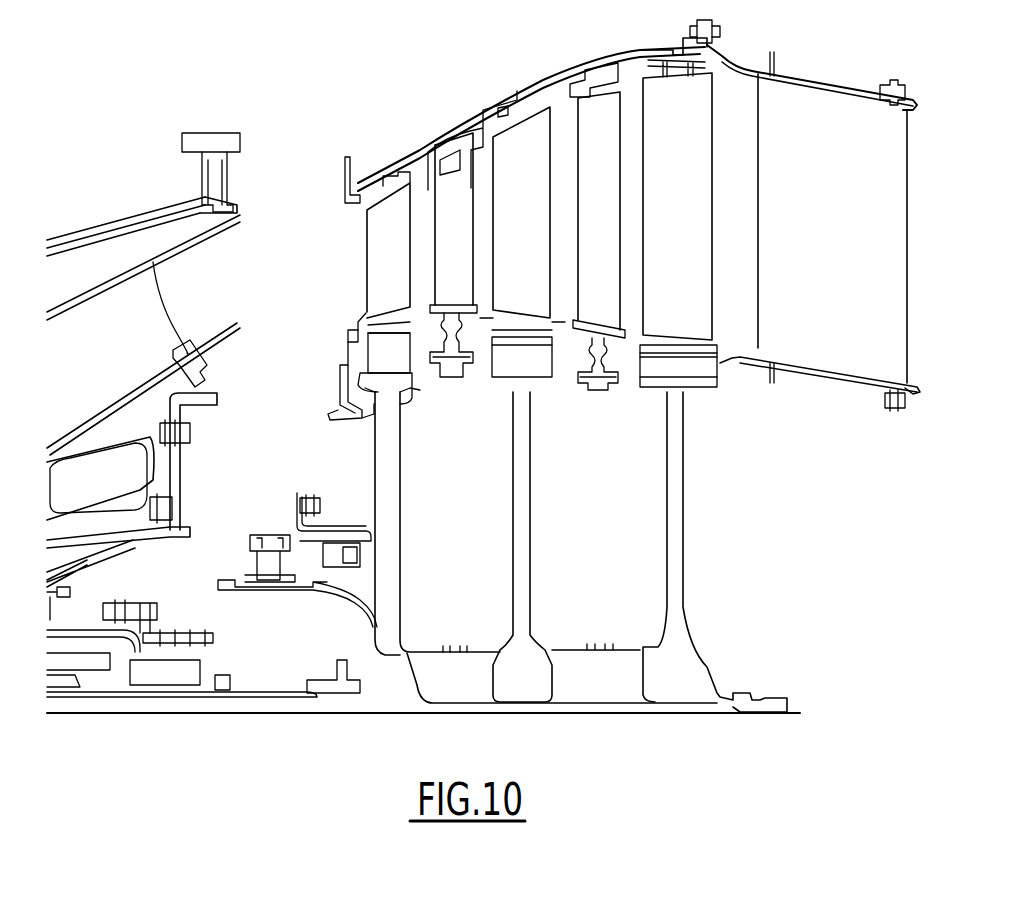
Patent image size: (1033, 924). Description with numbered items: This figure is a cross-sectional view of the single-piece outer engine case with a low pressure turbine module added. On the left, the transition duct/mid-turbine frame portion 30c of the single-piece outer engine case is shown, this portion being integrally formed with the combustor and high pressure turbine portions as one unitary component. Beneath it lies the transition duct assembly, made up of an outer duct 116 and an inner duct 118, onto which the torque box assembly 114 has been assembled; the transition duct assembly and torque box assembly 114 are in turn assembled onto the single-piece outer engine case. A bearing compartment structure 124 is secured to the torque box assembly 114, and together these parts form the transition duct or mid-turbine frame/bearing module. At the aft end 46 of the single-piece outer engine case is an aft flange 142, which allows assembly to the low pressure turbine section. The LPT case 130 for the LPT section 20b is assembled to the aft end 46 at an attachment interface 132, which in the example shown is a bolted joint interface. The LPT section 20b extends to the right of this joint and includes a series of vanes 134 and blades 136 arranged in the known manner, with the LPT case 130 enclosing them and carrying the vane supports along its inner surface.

The LPT case 130 is at (516, 92).
The vanes 134 is at (603, 145).
The blades 136 is at (693, 170).
The LPT section 20b is at (805, 513).
The aft flange 142 is at (207, 173).
The aft end 46 is at (233, 175).
The transition duct/mid-turbine frame portion 30c is at (145, 217).
The attachment interface 132 is at (255, 192).
The outer duct 116 is at (192, 240).
The inner duct 118 is at (220, 340).
The torque box assembly 114 is at (173, 477).
The bearing compartment structure 124 is at (127, 560).